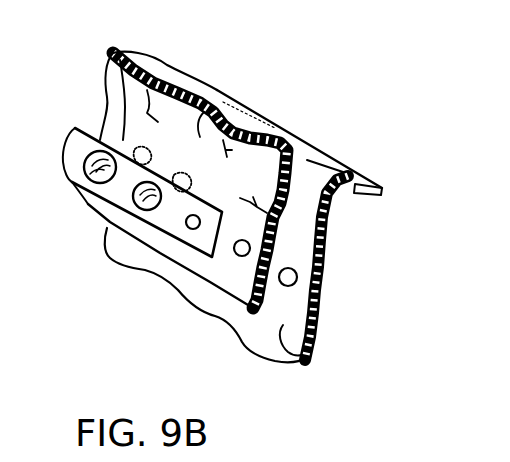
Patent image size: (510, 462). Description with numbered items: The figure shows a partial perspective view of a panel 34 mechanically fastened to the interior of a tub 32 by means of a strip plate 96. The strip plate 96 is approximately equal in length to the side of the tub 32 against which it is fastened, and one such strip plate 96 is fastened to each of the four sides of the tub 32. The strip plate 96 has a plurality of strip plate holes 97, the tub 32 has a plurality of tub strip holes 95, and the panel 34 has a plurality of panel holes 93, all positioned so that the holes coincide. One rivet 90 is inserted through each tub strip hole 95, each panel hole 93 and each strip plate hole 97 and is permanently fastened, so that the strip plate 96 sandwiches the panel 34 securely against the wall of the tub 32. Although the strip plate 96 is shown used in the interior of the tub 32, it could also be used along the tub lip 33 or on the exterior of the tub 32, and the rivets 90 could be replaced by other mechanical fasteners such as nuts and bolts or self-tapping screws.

The tub 32 is at (307, 357).
The tub lip 33 is at (373, 189).
The panel 34 is at (220, 92).
The rivet 90 is at (131, 200).
The panel hole 93 is at (238, 257).
The tub strip hole 95 is at (297, 270).
The strip plate 96 is at (80, 127).
The strip plate hole 97 is at (187, 226).